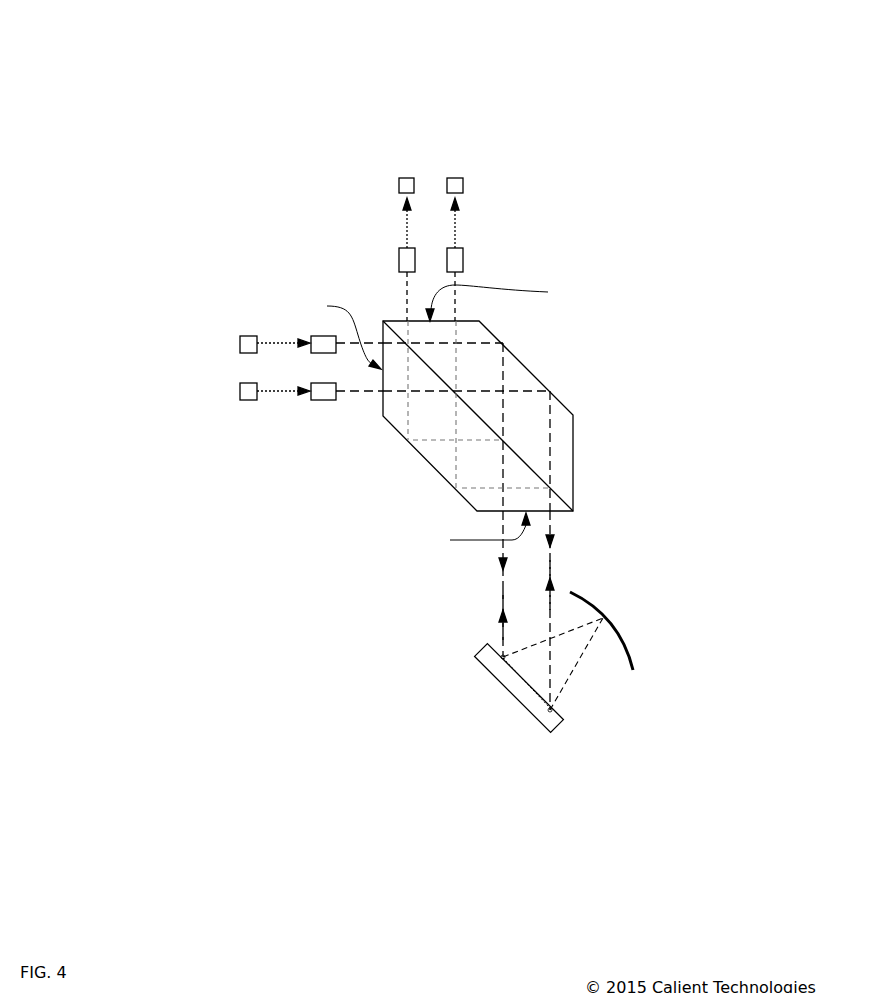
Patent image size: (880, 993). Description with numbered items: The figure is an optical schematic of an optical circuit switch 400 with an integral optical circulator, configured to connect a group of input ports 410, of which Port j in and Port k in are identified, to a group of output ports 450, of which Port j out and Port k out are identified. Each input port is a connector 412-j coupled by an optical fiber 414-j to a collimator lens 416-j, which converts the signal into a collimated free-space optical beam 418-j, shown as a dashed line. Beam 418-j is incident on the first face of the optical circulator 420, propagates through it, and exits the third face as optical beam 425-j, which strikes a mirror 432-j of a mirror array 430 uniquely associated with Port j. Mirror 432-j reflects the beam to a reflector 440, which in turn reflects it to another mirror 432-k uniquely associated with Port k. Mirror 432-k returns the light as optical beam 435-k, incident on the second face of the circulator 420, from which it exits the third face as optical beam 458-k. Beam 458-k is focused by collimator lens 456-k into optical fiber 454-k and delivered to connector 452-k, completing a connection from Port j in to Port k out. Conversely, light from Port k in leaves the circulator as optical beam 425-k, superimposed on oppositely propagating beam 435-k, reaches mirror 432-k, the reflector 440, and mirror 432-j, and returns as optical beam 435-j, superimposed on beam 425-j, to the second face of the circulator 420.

The optical circuit switch 400 is at (203, 66).
The input ports 410 is at (142, 301).
The connector 412-j is at (248, 401).
The optical fiber 414-j is at (270, 393).
The collimator lens 416-j is at (323, 401).
The optical beam 418-j is at (373, 393).
The optical circulator 420 is at (520, 366).
The optical beam 425-k is at (498, 566).
The optical beam 425-j is at (555, 540).
The mirror array 430 is at (470, 708).
The mirror 432-k is at (500, 660).
The mirror 432-j is at (547, 715).
The optical beam 435-k is at (497, 615).
The optical beam 435-j is at (555, 580).
The reflector 440 is at (616, 628).
The output ports 450 is at (377, 88).
The connector 452-k is at (399, 186).
The optical fiber 454-k is at (407, 223).
The collimator lens 456-k is at (399, 262).
The optical beam 458-k is at (407, 307).